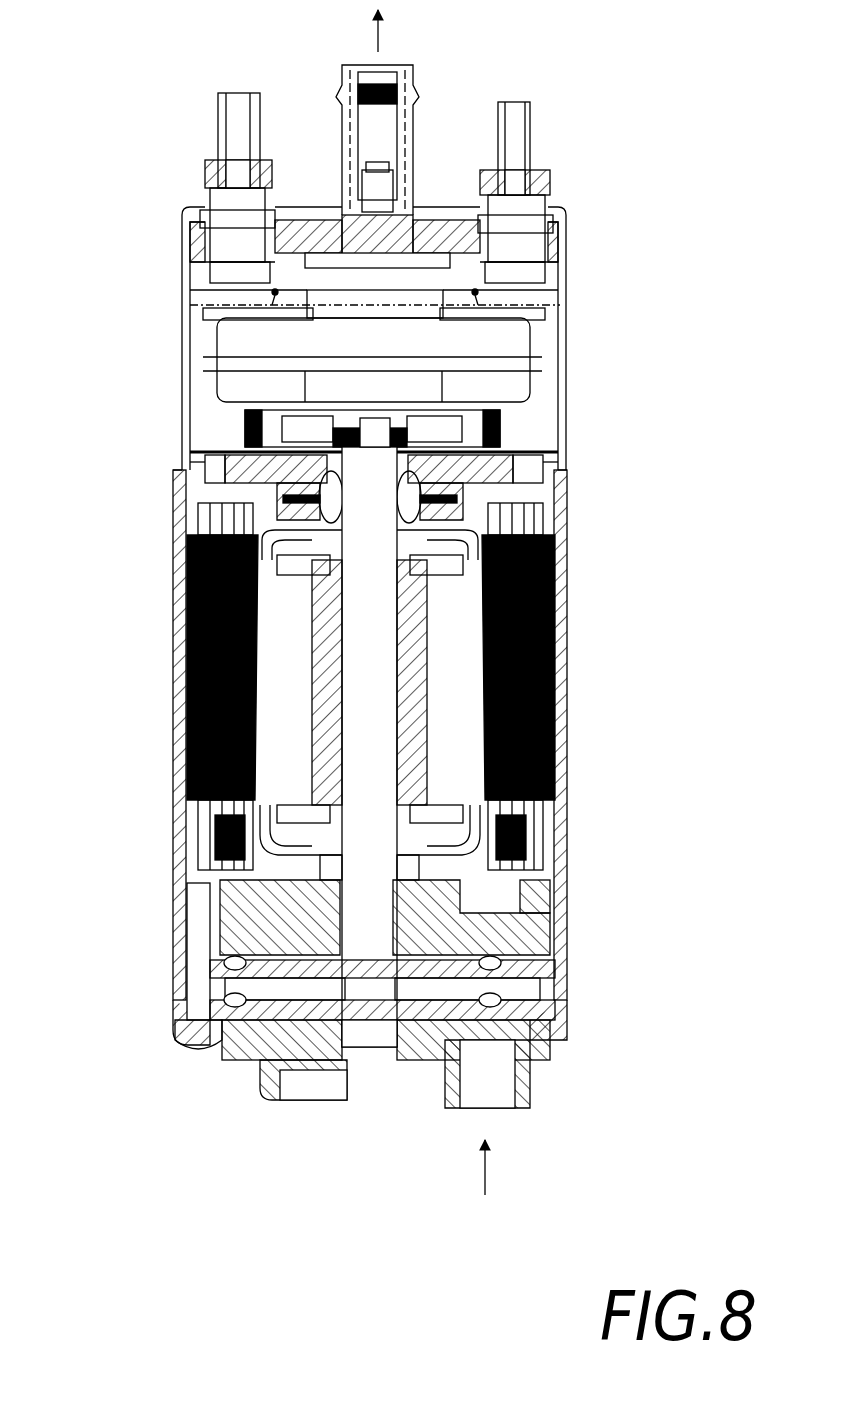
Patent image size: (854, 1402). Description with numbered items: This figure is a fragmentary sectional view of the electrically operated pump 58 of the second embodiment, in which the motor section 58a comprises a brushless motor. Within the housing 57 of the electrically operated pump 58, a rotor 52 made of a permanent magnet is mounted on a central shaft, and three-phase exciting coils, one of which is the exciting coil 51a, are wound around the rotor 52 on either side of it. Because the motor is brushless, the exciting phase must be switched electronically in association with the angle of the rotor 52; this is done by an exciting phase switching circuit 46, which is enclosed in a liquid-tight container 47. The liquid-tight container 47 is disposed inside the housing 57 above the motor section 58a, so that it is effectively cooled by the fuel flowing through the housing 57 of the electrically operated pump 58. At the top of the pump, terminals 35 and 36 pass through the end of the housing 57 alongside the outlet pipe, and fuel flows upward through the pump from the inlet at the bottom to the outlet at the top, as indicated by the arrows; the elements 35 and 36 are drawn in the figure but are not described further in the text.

The terminal 35 is at (532, 140).
The terminal 36 is at (218, 130).
The exciting phase switching circuit 46 is at (235, 338).
The liquid-tight container 47 is at (215, 395).
The exciting coil 51a is at (175, 625).
The rotor 52 is at (437, 797).
The housing 57 is at (180, 540).
The electrically operated pump 58 is at (570, 484).
The motor section 58a is at (572, 612).